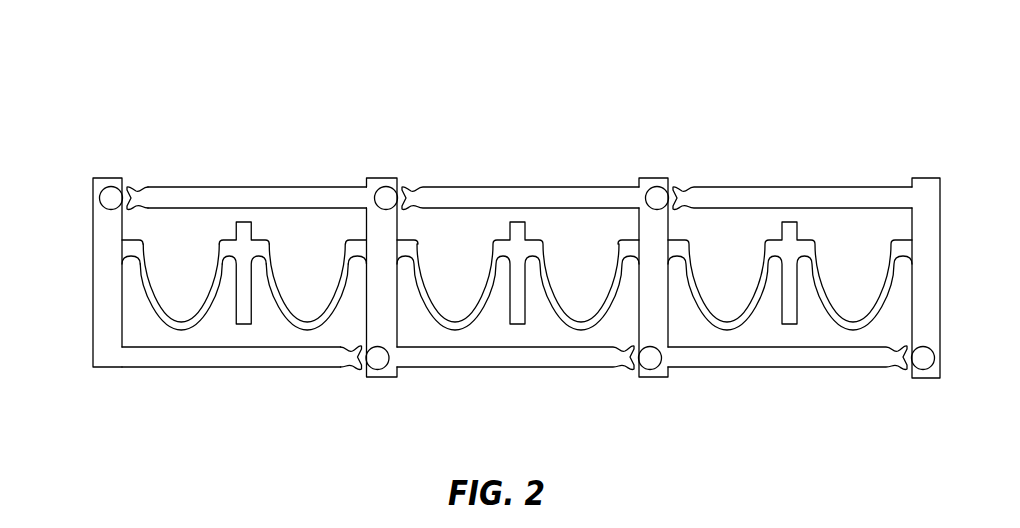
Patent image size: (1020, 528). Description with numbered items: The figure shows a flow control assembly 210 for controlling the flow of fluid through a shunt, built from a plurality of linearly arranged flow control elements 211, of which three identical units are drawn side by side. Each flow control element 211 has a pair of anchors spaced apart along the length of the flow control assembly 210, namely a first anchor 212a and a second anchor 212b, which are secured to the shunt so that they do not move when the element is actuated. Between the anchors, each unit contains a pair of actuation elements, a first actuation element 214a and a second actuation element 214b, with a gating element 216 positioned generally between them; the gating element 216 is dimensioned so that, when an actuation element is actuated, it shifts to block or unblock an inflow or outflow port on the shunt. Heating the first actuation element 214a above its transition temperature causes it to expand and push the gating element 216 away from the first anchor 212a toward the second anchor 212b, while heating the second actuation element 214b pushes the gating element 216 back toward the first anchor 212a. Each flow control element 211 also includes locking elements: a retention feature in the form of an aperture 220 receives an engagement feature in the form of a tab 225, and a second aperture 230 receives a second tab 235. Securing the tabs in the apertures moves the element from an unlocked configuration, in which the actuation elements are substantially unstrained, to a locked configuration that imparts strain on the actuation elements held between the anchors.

The flow control assembly 210 is at (276, 100).
The flow control element 211 is at (668, 168).
The first anchor 212a is at (105, 322).
The second anchor 212b is at (372, 216).
The first actuation element 214a is at (168, 322).
The second actuation element 214b is at (295, 324).
The gating element 216 is at (243, 322).
The aperture 220 is at (112, 192).
The tab 225 is at (134, 196).
The second aperture 230 is at (377, 362).
The second tab 235 is at (356, 360).